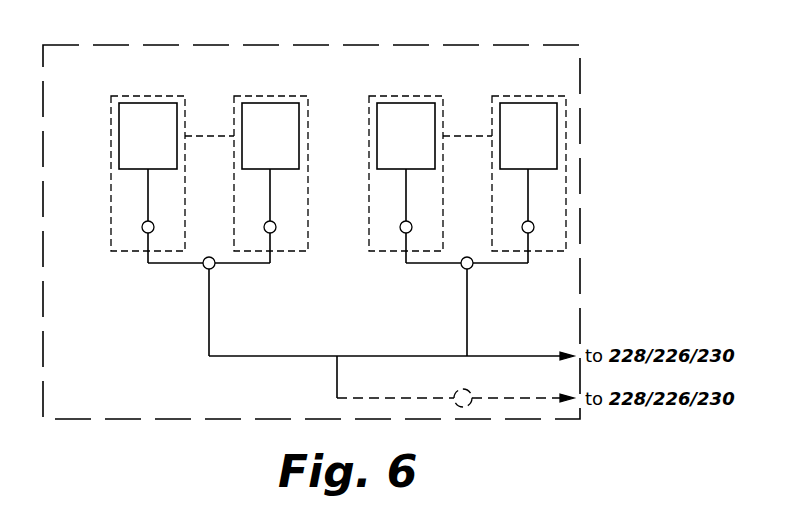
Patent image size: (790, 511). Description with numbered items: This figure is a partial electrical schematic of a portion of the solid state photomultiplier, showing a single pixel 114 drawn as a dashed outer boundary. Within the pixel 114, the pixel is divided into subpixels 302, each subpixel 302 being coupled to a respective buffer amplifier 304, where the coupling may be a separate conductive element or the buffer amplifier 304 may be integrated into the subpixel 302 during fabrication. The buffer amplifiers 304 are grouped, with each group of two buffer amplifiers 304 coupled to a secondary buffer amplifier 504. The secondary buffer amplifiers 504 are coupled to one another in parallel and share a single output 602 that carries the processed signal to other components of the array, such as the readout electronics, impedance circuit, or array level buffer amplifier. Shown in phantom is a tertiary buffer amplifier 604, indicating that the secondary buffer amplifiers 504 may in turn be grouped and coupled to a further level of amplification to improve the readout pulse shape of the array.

The pixel 114 is at (580, 67).
The subpixel 302 is at (130, 96).
The buffer amplifier 304 is at (142, 226).
The secondary buffer amplifier 504 is at (205, 268).
The single output 602 is at (485, 356).
The tertiary buffer amplifier 604 is at (470, 391).